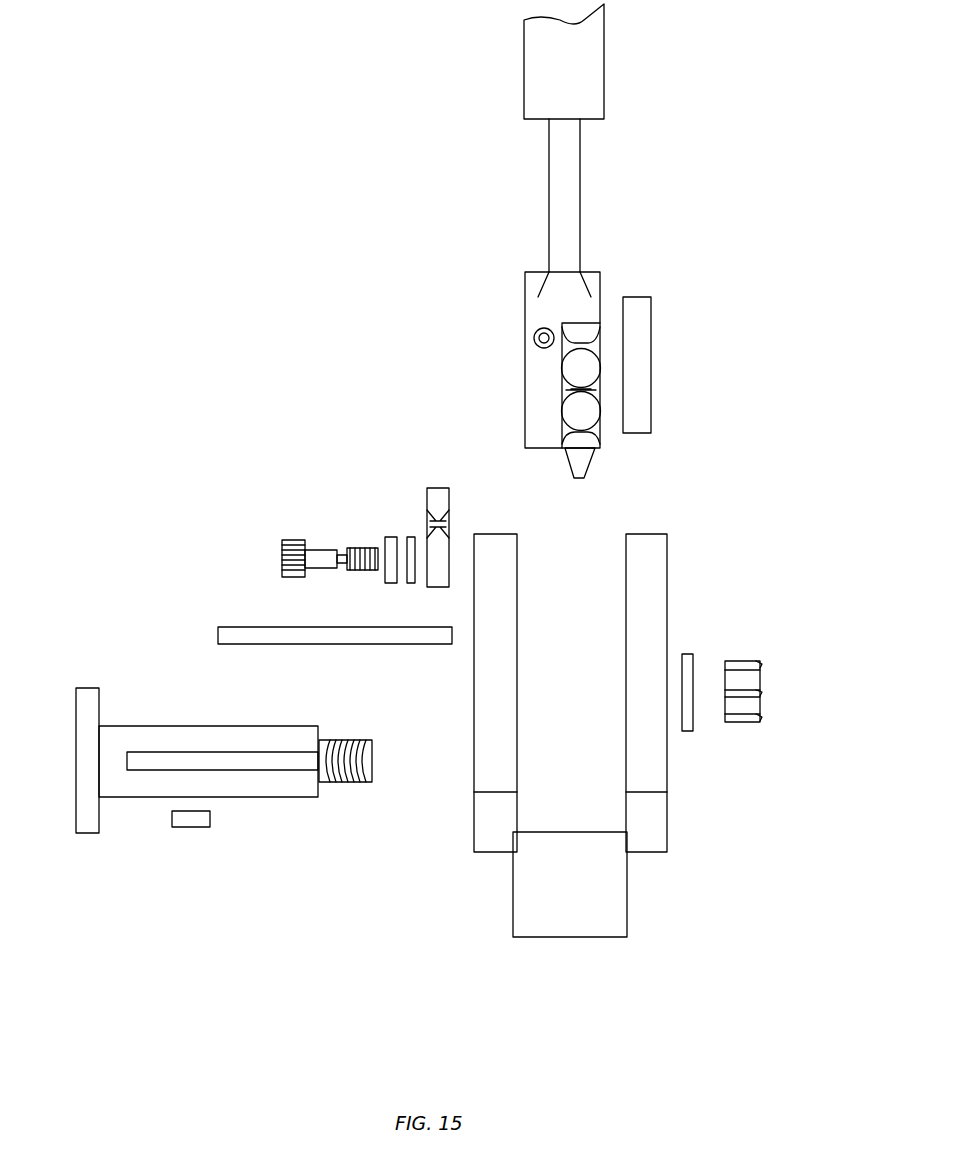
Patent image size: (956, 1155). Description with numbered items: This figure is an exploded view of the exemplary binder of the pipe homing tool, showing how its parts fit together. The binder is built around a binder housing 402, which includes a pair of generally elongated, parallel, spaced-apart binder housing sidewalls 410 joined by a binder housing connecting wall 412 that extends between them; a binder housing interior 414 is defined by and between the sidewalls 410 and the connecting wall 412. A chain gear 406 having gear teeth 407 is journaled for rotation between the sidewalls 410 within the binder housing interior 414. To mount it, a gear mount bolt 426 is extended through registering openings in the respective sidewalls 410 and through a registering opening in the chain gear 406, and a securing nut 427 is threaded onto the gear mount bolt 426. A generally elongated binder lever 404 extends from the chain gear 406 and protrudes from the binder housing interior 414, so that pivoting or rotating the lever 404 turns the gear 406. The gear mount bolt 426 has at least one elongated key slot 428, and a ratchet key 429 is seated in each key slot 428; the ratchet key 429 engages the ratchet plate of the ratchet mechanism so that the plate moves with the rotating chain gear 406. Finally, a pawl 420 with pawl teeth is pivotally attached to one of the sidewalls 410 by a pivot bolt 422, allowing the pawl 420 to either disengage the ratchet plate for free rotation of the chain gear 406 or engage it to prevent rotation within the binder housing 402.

The binder housing 402 is at (470, 823).
The binder lever 404 is at (583, 97).
The chain gear 406 is at (536, 372).
The gear teeth 407 is at (583, 463).
The binder housing sidewalls 410 is at (642, 720).
The binder housing connecting wall 412 is at (605, 906).
The binder housing interior 414 is at (596, 548).
The pawl 420 is at (441, 497).
The pivot bolt 422 is at (322, 560).
The gear mount bolt 426 is at (90, 818).
The securing nut 427 is at (748, 676).
The key slot 428 is at (250, 770).
The ratchet key 429 is at (430, 650).